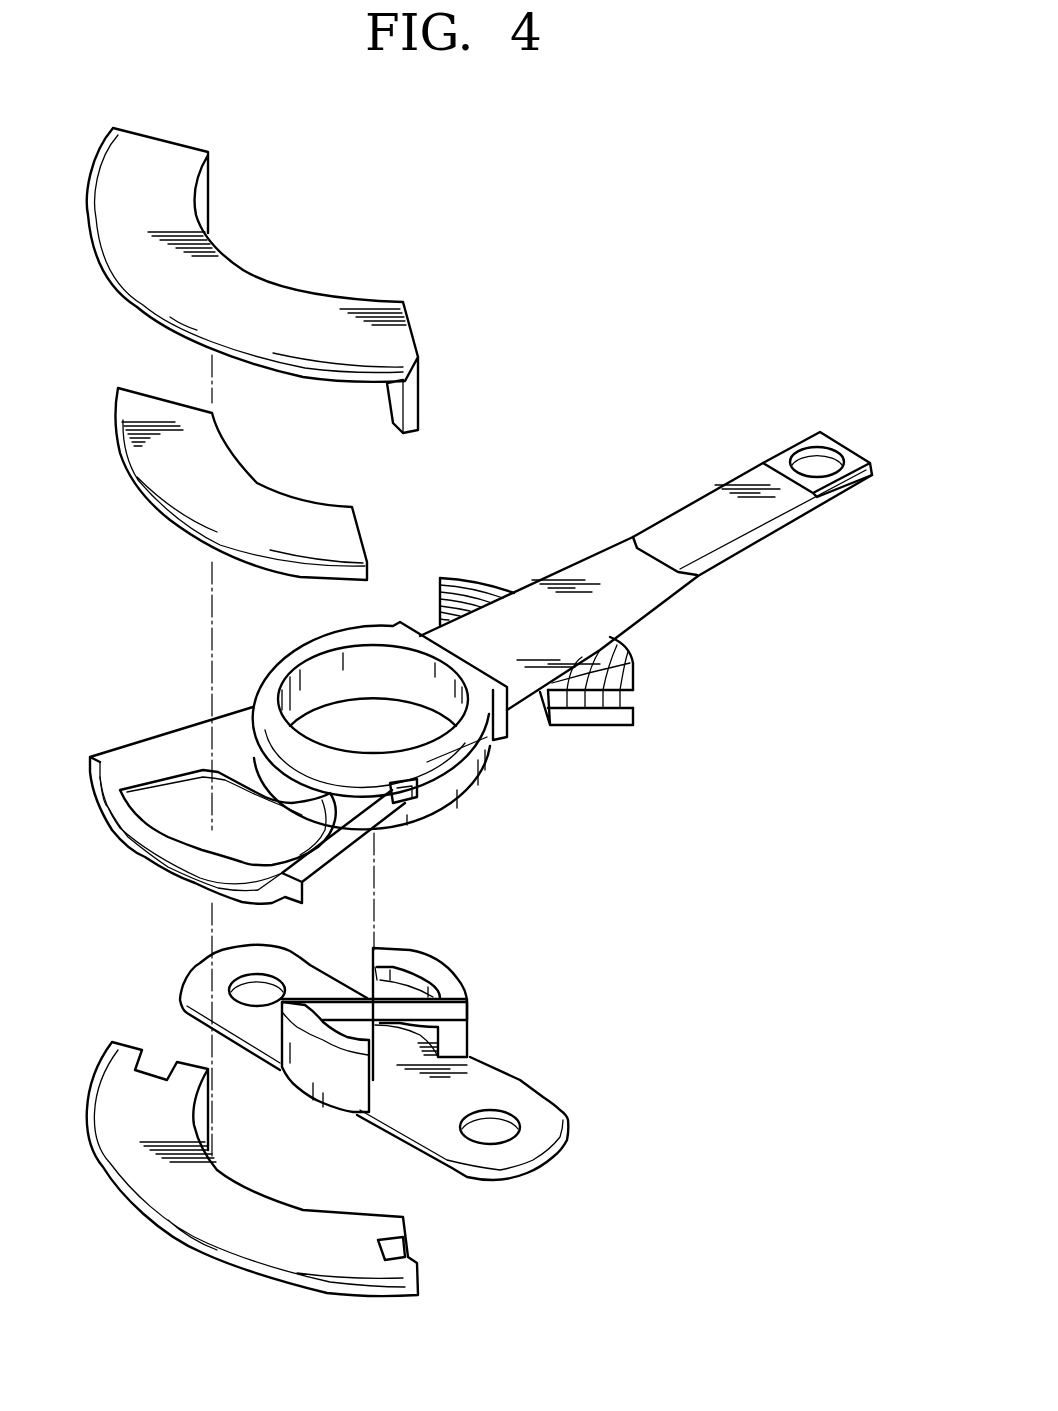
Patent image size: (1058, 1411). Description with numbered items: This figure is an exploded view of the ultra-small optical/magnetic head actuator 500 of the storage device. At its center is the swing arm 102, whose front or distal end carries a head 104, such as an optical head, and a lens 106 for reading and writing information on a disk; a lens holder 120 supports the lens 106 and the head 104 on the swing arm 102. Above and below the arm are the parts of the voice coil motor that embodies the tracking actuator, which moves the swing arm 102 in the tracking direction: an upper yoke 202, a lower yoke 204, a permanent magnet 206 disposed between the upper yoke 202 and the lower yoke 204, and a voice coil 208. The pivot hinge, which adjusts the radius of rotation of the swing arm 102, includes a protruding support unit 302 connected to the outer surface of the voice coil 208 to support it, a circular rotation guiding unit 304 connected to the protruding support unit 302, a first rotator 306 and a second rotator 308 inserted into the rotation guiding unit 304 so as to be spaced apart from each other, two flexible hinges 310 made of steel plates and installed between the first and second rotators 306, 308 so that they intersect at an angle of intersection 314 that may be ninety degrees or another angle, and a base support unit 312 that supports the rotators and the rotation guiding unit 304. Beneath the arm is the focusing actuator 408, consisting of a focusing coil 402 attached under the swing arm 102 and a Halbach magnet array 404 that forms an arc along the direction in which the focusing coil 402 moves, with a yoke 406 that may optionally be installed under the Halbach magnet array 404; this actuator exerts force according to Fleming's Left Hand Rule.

The optical/magnetic head actuator 500 is at (656, 246).
The swing arm 102 is at (590, 572).
The head 104 is at (850, 462).
The lens 106 is at (813, 457).
The lens holder 120 is at (685, 522).
The upper yoke 202 is at (273, 297).
The lower yoke 204 is at (198, 1218).
The permanent magnet 206 is at (272, 505).
The voice coil 208 is at (142, 848).
The protruding support unit 302 is at (167, 740).
The rotation guiding unit 304 is at (467, 782).
The first rotator 306 is at (330, 1093).
The second rotator 308 is at (438, 973).
The flexible hinges 310 is at (463, 1012).
The base support unit 312 is at (537, 1142).
The angle of intersection 314 is at (398, 983).
The focusing coil 402 is at (633, 660).
The Halbach magnet array 404 is at (628, 697).
The yoke 406 is at (623, 717).
The focusing actuator 408 is at (664, 696).